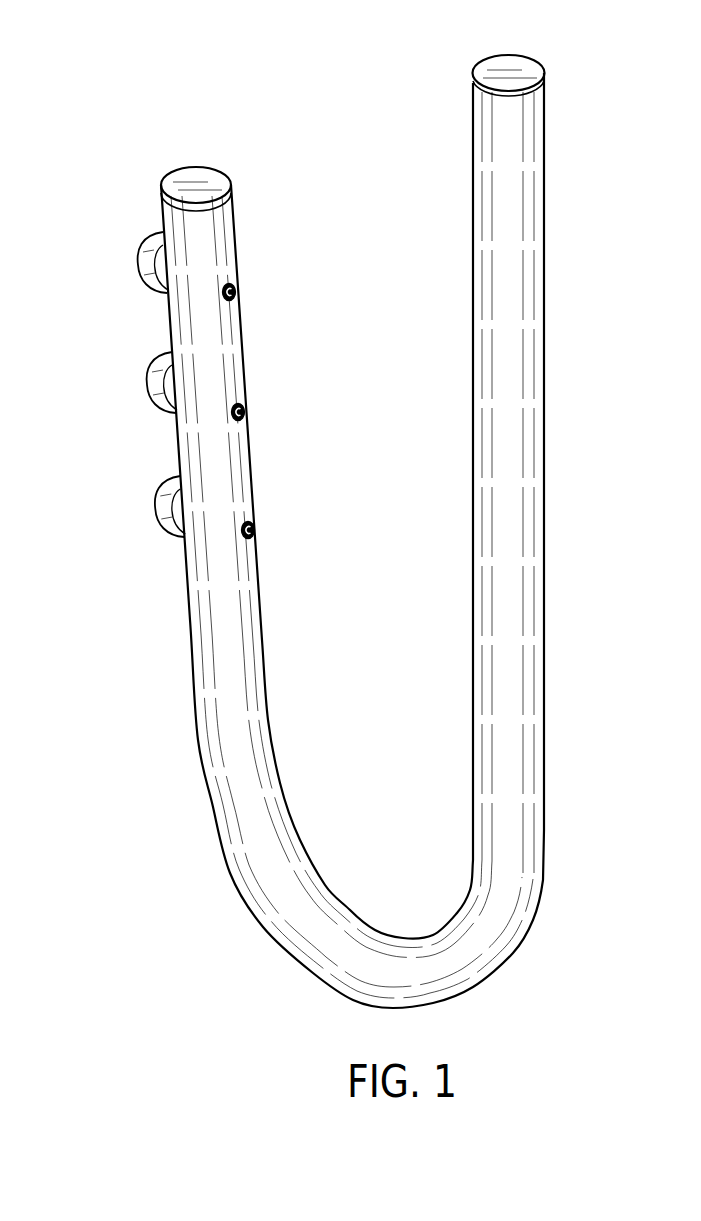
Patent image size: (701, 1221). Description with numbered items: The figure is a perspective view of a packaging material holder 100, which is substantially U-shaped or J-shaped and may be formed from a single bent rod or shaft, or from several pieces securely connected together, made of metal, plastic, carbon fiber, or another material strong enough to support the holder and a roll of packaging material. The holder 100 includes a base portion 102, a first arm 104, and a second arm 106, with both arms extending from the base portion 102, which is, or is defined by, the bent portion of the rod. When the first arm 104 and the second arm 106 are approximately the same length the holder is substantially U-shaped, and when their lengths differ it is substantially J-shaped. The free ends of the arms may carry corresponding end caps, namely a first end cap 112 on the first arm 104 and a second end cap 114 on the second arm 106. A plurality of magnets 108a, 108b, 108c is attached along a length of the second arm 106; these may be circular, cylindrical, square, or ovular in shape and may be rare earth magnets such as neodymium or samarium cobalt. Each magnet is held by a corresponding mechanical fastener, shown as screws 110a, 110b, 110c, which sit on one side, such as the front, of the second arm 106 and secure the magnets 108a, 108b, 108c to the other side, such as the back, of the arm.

The packaging material holder 100 is at (333, 507).
The base portion 102 is at (228, 877).
The first arm 104 is at (545, 376).
The second arm 106 is at (190, 622).
The magnet 108a is at (138, 265).
The magnet 108b is at (147, 386).
The magnet 108c is at (156, 510).
The screw 110a is at (236, 290).
The screw 110b is at (244, 410).
The screw 110c is at (254, 528).
The first end cap 112 is at (544, 73).
The second end cap 114 is at (162, 183).